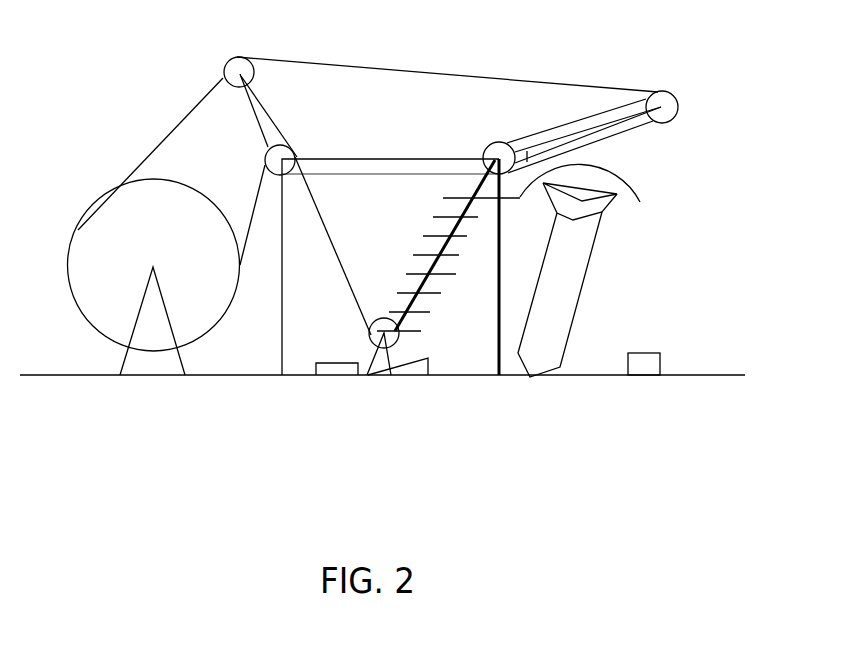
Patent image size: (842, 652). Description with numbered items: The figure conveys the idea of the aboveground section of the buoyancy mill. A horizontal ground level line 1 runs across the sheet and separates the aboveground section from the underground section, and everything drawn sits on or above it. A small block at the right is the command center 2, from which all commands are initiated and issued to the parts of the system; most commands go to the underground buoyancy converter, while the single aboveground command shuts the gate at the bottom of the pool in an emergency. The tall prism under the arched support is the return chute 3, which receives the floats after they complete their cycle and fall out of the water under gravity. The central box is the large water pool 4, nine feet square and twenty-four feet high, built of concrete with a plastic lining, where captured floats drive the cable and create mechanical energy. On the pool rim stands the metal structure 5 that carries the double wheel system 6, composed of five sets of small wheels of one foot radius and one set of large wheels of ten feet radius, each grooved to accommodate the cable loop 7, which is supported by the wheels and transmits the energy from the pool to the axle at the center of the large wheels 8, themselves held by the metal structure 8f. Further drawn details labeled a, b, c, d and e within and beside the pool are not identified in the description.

The ground level line 1 is at (390, 376).
The command center 2 is at (660, 353).
The return chute 3 is at (600, 248).
The large water pool 4 is at (640, 203).
The metal structure 5 is at (518, 154).
The double wheel system 6 is at (678, 107).
The cable loop 7 is at (368, 175).
The large wheels 8 is at (182, 236).
The metal structure supporting the large wheels 8f is at (153, 267).
The graduated scale a is at (424, 262).
The inclined rod b is at (437, 245).
The lower pulley c is at (352, 335).
The wedge d is at (427, 340).
The support block e is at (327, 353).